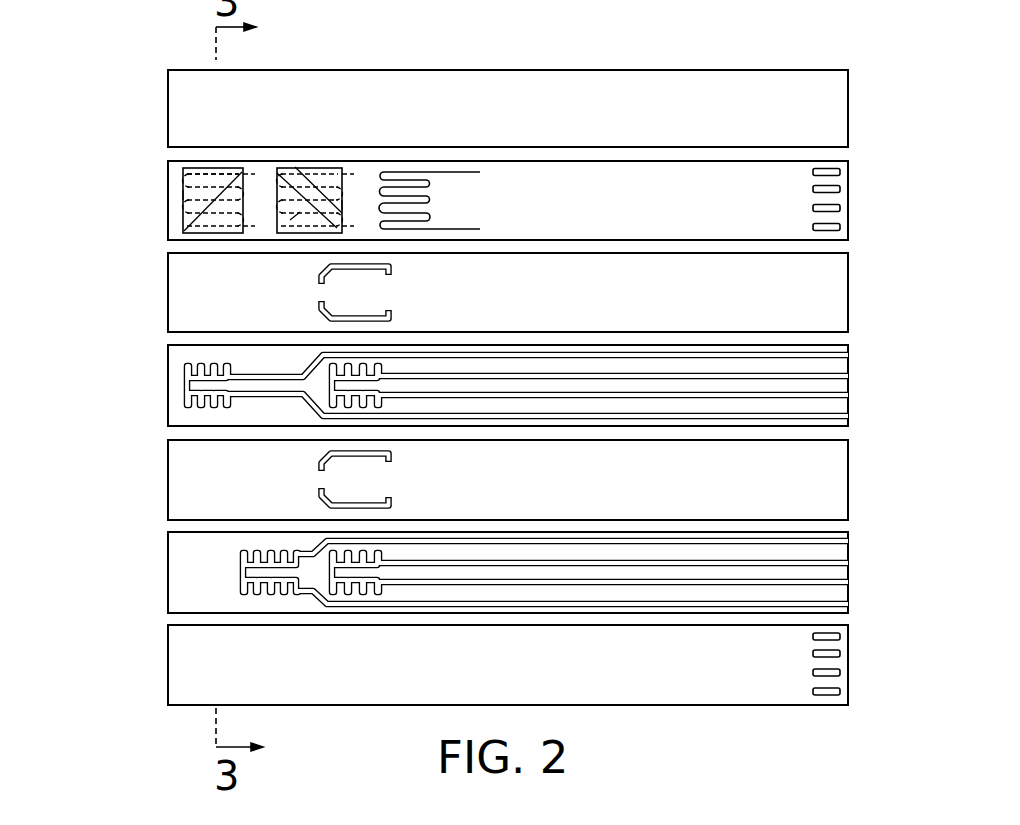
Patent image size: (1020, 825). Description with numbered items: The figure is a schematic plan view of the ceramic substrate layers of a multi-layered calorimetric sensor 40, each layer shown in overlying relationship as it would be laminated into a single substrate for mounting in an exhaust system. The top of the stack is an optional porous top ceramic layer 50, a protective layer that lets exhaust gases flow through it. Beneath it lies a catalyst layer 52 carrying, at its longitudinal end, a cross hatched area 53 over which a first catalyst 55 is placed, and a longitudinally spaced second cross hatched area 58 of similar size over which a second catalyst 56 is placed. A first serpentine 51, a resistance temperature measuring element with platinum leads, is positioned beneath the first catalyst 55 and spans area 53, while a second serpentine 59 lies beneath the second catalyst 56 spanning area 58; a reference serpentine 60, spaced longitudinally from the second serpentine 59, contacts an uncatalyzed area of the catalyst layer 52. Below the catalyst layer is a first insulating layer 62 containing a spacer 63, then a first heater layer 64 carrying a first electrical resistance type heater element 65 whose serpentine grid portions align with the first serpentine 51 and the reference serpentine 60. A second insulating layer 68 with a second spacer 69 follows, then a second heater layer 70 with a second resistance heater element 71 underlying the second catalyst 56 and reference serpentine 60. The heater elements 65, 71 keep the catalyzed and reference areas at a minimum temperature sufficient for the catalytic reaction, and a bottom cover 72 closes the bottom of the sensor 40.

The calorimetric sensor 40 is at (598, 45).
The porous top ceramic layer 50 is at (160, 87).
The first serpentine 51 is at (226, 172).
The catalyst layer 52 is at (160, 214).
The cross hatched area 53 is at (243, 213).
The first catalyst 55 is at (183, 195).
The second catalyst 56 is at (298, 216).
The second cross hatched area 58 is at (343, 205).
The second serpentine 59 is at (318, 166).
The reference serpentine 60 is at (422, 173).
The first insulating layer 62 is at (450, 313).
The spacer 63 is at (365, 317).
The first heater layer 64 is at (451, 393).
The first electrical resistance type heater element 65 is at (183, 398).
The second insulating layer 68 is at (447, 480).
The second spacer 69 is at (373, 502).
The second heater layer 70 is at (450, 573).
The second resistance heater element 71 is at (240, 577).
The bottom cover 72 is at (168, 660).